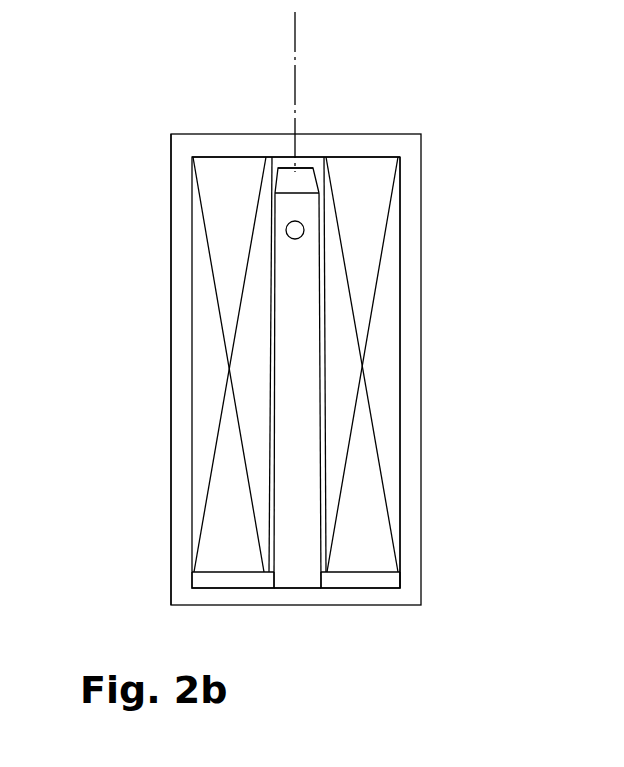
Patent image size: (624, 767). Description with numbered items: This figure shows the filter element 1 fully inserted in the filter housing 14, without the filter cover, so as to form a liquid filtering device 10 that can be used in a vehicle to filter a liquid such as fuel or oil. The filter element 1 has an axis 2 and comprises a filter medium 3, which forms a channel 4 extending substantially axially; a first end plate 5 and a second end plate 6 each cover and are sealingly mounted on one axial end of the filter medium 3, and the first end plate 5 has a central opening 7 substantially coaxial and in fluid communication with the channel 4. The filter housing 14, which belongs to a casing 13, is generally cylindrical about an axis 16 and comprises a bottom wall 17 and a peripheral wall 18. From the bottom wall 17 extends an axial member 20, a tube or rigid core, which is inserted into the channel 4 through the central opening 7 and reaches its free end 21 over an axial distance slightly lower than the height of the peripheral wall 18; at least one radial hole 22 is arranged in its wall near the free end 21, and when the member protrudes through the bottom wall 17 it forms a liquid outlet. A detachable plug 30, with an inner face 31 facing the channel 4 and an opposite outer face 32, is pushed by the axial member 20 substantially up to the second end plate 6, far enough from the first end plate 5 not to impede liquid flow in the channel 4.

The filter element 1 is at (403, 217).
The axis 2 is at (354, 92).
The filter medium 3 is at (230, 522).
The channel 4 is at (267, 355).
The first end plate 5 is at (370, 593).
The second end plate 6 is at (235, 152).
The central opening 7 is at (293, 588).
The liquid filtering device 10 is at (127, 306).
The casing 13 is at (95, 369).
The filter housing 14 is at (158, 463).
The axis 16 is at (297, 62).
The bottom wall 17 is at (233, 593).
The peripheral wall 18 is at (412, 508).
The axial member 20 is at (303, 302).
The free end 21 is at (292, 194).
The radial hole 22 is at (305, 229).
The detachable plug 30 is at (210, 146).
The inner face 31 is at (305, 168).
The outer face 32 is at (198, 207).